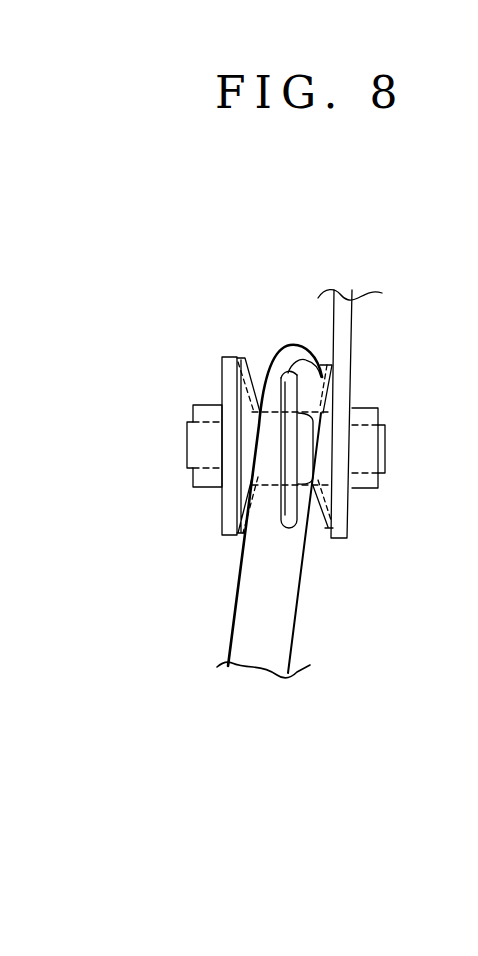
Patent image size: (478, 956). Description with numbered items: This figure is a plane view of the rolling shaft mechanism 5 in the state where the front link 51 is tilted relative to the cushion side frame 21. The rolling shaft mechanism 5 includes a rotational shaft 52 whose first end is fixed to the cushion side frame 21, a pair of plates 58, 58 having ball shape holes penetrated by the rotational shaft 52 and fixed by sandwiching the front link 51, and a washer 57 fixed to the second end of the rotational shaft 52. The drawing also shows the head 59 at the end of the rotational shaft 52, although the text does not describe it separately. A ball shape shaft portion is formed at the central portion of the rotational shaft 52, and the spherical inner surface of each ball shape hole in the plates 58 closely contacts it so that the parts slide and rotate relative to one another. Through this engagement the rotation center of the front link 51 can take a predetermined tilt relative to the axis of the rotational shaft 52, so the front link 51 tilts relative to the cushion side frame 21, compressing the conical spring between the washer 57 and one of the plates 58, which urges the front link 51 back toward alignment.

The rolling shaft mechanism 5 is at (306, 279).
The cushion side frame 21 is at (348, 338).
The link 51 is at (278, 617).
The rotational shaft 52 is at (385, 433).
The washer 57 is at (257, 365).
The plate 58 is at (308, 335).
The bolt head 59 is at (233, 372).